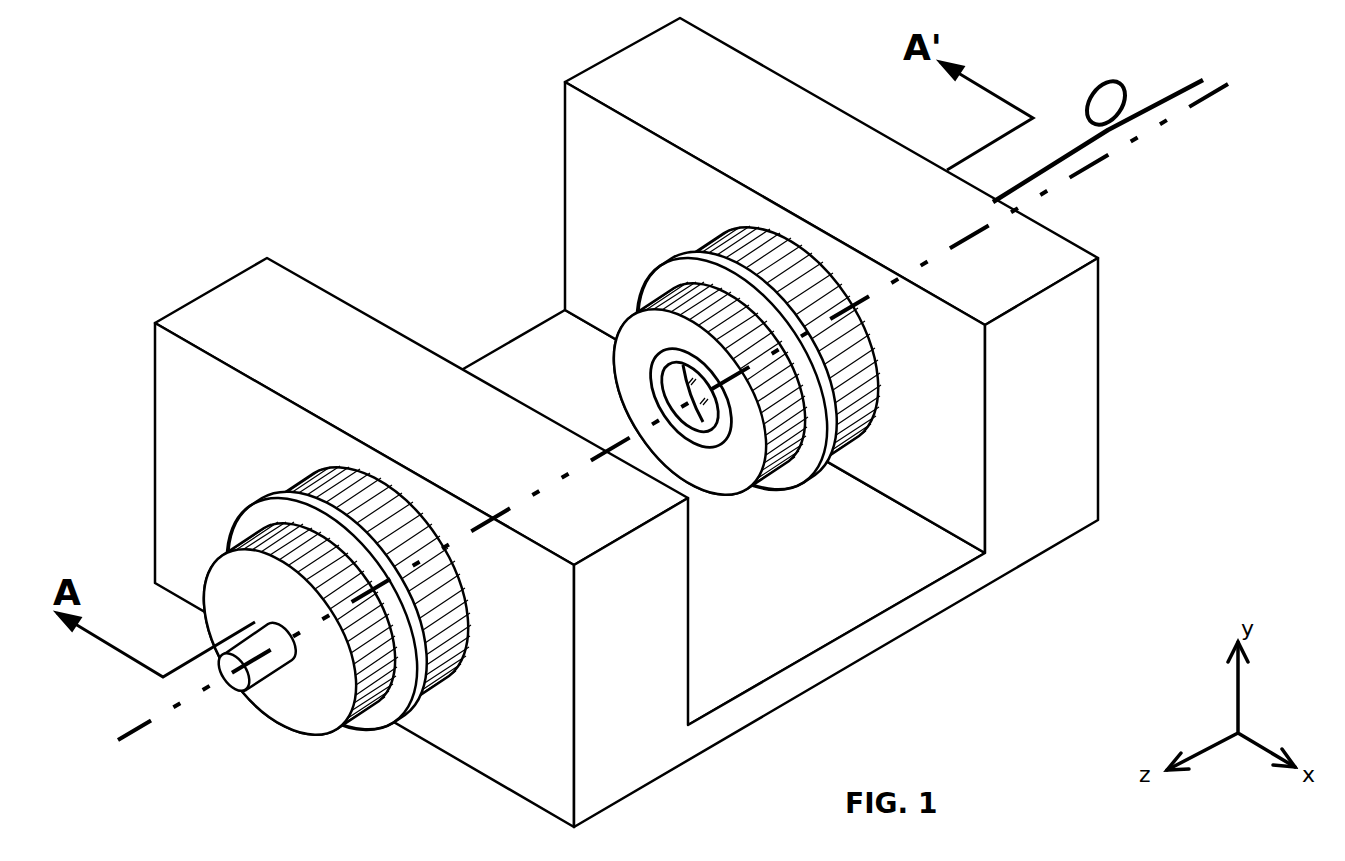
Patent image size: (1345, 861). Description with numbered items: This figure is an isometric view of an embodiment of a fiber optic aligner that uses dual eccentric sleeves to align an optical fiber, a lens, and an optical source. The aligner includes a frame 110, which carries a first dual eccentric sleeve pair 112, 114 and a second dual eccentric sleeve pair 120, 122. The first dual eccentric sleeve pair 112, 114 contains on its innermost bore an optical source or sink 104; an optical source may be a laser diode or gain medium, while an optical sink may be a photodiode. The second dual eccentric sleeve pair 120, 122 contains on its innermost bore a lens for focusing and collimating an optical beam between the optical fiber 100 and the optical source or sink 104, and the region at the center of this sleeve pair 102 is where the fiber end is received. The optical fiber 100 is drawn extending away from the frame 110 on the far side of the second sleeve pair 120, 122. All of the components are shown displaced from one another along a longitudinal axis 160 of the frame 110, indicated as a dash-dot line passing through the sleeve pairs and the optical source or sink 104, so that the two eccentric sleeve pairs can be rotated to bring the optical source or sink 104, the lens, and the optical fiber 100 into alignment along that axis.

The optical fiber 100 is at (1090, 92).
The fiber passage bore 102 is at (693, 408).
The optical source or sink 104 is at (229, 690).
The frame 110 is at (232, 313).
The first dual eccentric sleeve pair sleeve 112 is at (247, 547).
The first dual eccentric sleeve pair sleeve 114 is at (307, 477).
The second dual eccentric sleeve pair sleeve 120 is at (661, 306).
The second dual eccentric sleeve pair sleeve 122 is at (712, 242).
The longitudinal axis 160 is at (1090, 173).